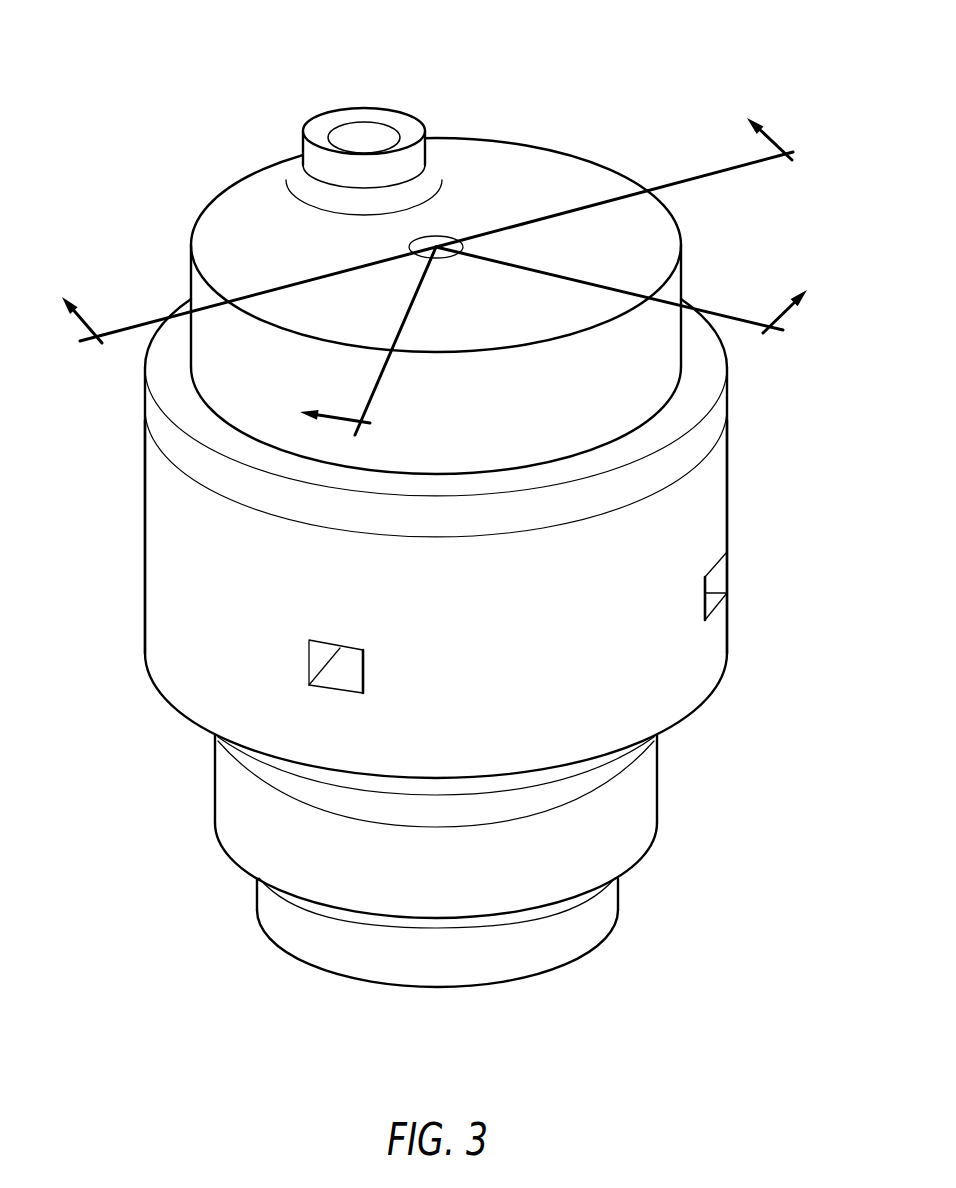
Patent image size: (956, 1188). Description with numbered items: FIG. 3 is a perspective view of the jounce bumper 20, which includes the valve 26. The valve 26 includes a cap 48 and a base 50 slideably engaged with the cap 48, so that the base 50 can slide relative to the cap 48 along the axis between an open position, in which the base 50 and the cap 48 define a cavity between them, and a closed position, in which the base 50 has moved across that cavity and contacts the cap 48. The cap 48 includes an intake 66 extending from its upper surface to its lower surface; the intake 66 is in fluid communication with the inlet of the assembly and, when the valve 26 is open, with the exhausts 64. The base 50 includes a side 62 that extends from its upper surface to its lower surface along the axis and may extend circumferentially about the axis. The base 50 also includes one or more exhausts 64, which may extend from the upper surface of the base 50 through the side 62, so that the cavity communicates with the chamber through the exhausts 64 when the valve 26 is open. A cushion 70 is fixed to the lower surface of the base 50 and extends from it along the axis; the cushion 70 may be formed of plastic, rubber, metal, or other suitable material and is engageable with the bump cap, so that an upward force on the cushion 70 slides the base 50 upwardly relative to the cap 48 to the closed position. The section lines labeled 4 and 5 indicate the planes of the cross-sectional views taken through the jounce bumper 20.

The jounce bumper 20 is at (168, 69).
The valve 26 is at (133, 492).
The cap 48 is at (523, 145).
The base 50 is at (143, 545).
The side 62 is at (143, 608).
The exhausts 64 is at (363, 678).
The intake 66 is at (392, 108).
The cushion 70 is at (255, 896).
The section line 4- 4 is at (556, 284).
The section line 5- 5 is at (434, 316).